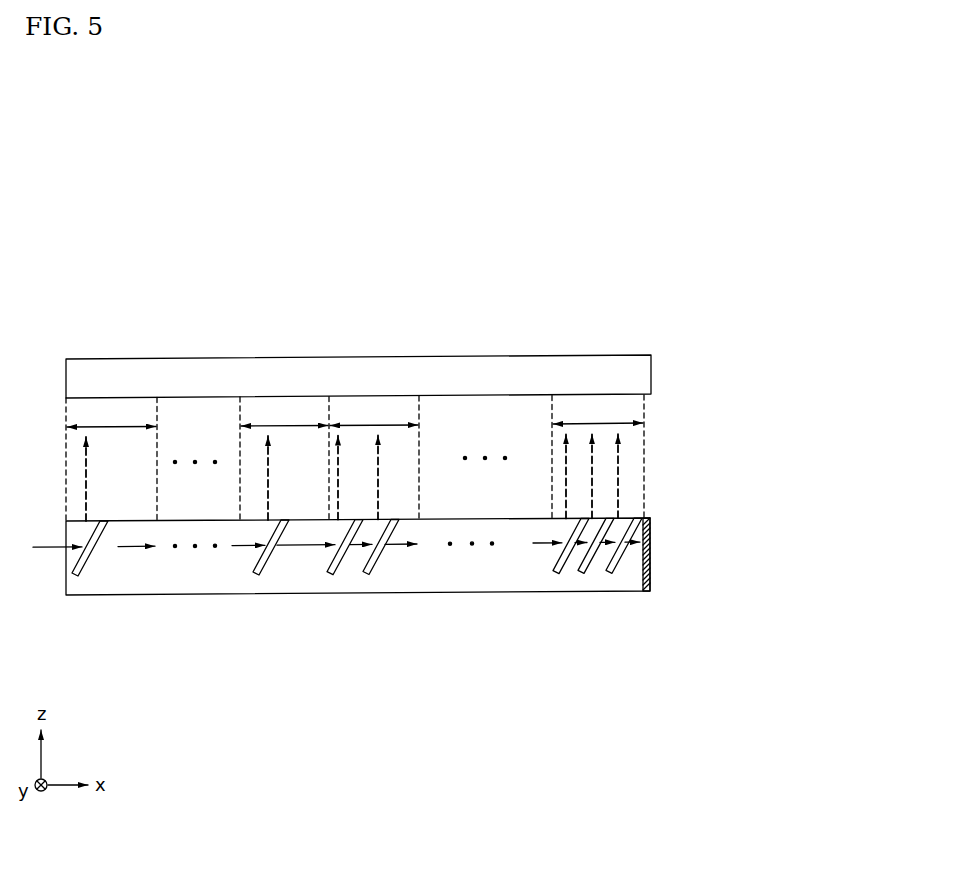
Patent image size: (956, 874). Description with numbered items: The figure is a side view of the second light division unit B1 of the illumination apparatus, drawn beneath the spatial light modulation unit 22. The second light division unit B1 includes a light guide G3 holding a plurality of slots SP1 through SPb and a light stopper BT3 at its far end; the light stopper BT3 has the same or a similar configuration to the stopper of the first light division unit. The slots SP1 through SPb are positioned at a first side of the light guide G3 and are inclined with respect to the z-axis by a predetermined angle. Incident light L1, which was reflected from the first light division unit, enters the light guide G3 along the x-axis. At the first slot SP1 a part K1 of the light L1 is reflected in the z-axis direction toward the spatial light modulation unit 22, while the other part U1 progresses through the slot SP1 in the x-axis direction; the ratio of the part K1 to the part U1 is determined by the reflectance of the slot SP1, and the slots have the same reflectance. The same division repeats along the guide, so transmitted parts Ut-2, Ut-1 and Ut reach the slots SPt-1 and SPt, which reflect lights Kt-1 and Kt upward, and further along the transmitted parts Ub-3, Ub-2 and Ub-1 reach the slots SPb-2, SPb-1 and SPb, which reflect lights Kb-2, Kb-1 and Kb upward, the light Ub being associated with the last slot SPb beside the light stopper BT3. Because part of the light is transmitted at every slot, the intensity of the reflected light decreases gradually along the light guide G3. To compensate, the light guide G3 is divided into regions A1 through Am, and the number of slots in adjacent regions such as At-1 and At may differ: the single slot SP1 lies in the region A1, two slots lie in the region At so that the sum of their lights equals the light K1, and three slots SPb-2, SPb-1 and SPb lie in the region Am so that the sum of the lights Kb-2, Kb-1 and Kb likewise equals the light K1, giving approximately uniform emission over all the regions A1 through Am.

The spatial light modulation unit 22 is at (653, 361).
The second light division unit B1 is at (160, 608).
The light stopper BT3 is at (652, 532).
The incident light L1 is at (45, 530).
The first divided region A1 is at (111, 460).
The divided region At-1 is at (284, 458).
The divided region At is at (374, 457).
The last divided region Am is at (598, 457).
The reflected light part K1 is at (87, 486).
The reflected light part Kt-1 is at (268, 485).
The reflected light part Kt is at (338, 494).
The reflected light part Kb-2 is at (566, 495).
The reflected light part Kb-1 is at (593, 493).
The reflected light part Kb is at (619, 465).
The first slot SP1 is at (72, 577).
The slot SPt-1 is at (254, 575).
The slot SPt is at (333, 575).
The slot SPb-2 is at (556, 574).
The slot SPb-1 is at (582, 574).
The last slot SPb is at (610, 574).
The transmitted light part U1 is at (118, 563).
The transmitted light part Ut-2 is at (243, 563).
The transmitted light part Ut-1 is at (307, 565).
The transmitted light part Ut is at (350, 565).
The transmitted light part Ub-3 is at (533, 563).
The transmitted light part Ub-2 is at (570, 563).
The transmitted light part Ub-1 is at (600, 563).
The light part Ub is at (646, 570).
The light guide G3 is at (197, 584).